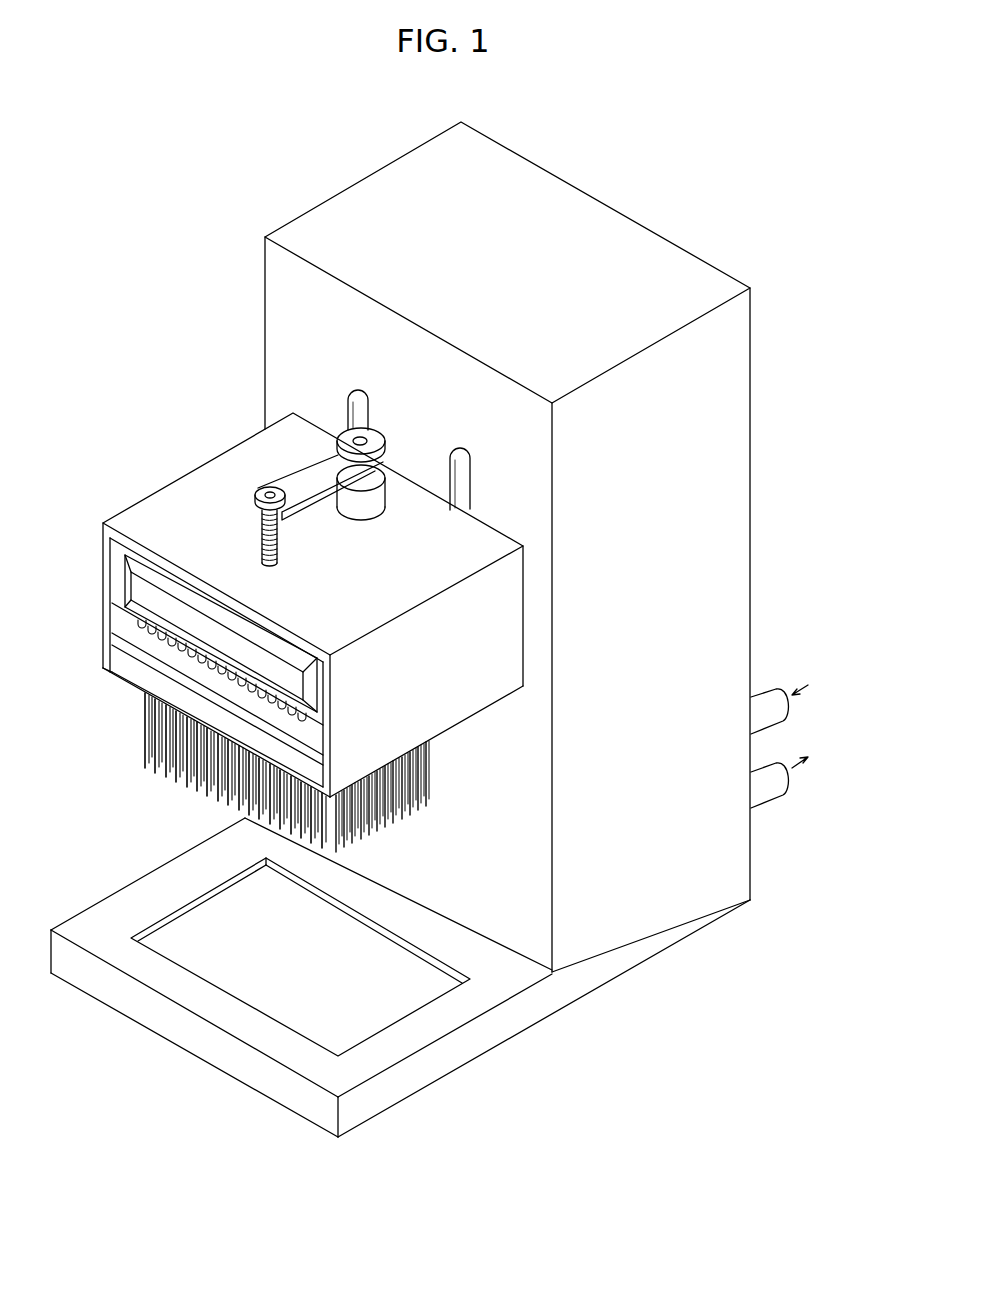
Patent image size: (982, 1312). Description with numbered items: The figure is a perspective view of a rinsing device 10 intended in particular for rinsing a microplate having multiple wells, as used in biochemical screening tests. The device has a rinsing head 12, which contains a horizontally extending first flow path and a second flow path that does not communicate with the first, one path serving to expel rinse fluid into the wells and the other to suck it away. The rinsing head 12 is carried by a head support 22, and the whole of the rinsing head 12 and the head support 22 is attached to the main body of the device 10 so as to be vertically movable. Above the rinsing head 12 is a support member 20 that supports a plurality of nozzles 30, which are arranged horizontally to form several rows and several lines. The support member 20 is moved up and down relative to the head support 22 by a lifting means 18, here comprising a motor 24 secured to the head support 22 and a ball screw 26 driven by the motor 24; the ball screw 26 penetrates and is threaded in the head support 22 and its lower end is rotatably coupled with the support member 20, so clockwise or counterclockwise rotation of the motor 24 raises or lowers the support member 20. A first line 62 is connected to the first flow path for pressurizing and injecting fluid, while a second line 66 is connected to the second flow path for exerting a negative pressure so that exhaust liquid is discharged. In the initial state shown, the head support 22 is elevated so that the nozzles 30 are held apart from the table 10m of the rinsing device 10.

The rinsing device 10 is at (560, 1094).
The table 10m is at (381, 997).
The rinsing head 12 is at (120, 628).
The lifting means 18 is at (389, 396).
The support member 20 is at (135, 590).
The head support 22 is at (155, 518).
The motor 24 is at (362, 507).
The ball screw 26 is at (258, 532).
The nozzles 30 is at (377, 799).
The first line 62 is at (773, 795).
The second line 66 is at (764, 690).